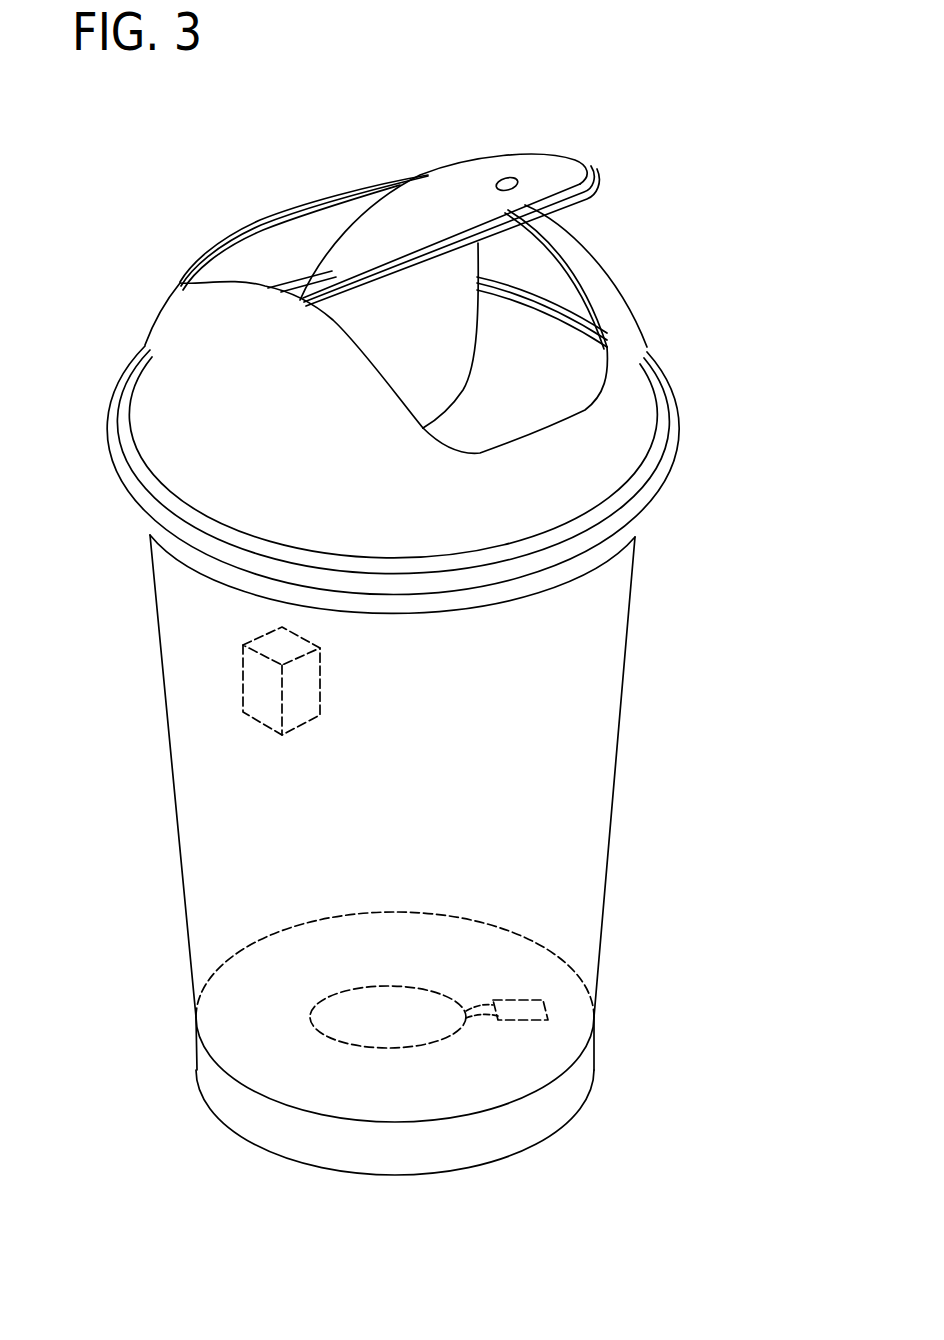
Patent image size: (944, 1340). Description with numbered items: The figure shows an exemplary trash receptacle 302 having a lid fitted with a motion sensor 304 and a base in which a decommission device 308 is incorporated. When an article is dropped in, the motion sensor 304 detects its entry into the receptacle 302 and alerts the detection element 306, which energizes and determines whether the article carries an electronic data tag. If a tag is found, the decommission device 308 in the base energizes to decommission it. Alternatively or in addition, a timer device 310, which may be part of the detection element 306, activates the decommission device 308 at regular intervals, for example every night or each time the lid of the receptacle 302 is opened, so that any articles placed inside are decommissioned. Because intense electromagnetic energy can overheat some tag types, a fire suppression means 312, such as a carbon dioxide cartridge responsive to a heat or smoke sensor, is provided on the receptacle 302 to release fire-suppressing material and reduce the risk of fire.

The receptacle 302 is at (622, 693).
The motion sensor 304 is at (515, 177).
The detection element 306 is at (520, 1075).
The decommission device 308 is at (433, 1045).
The timer device 310 is at (545, 1007).
The fire suppression means 312 is at (262, 688).